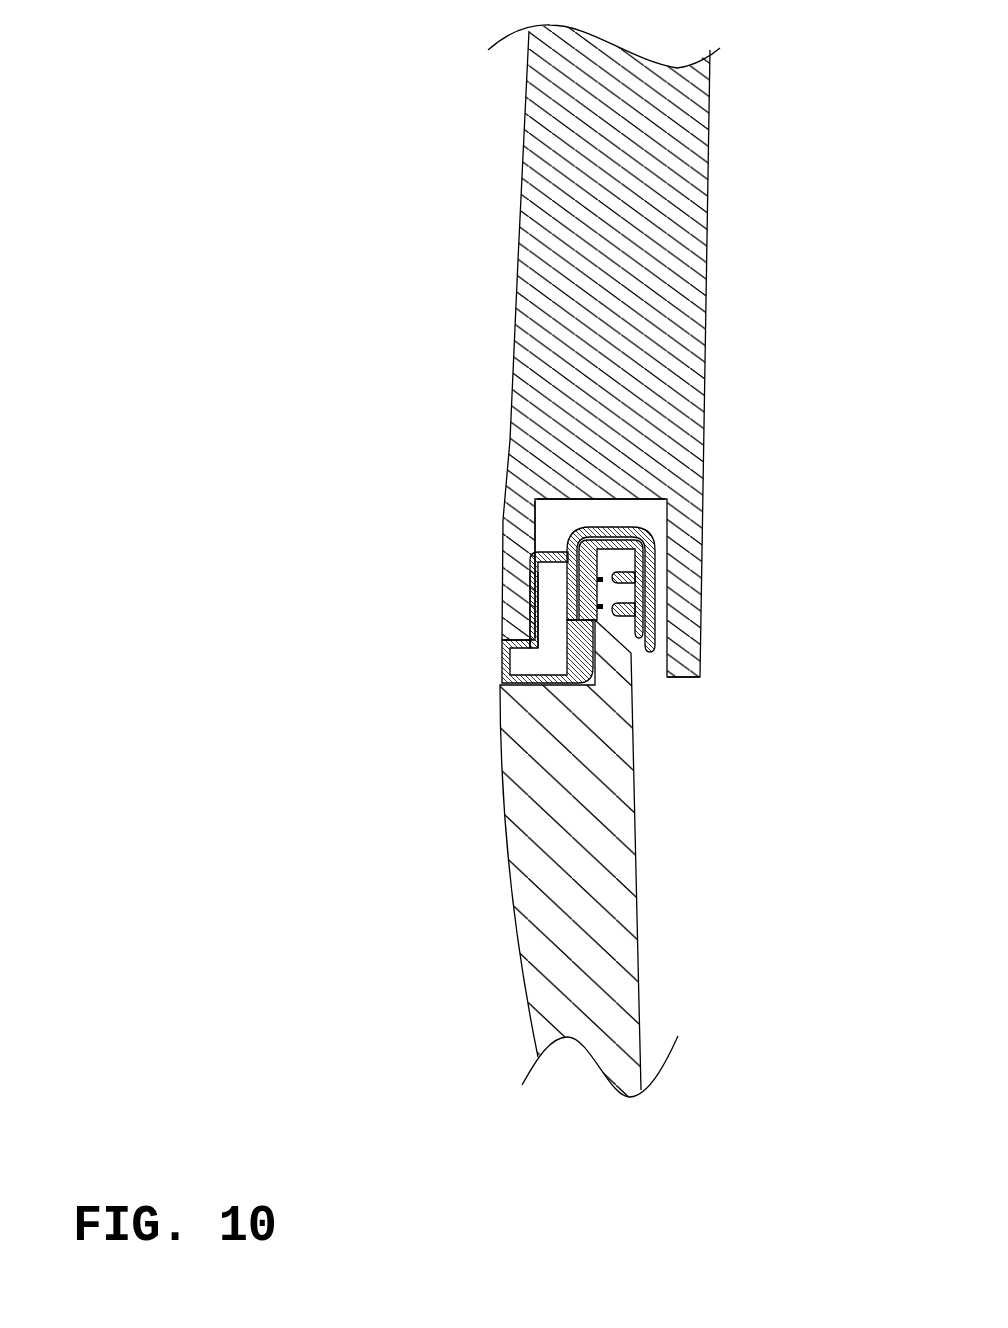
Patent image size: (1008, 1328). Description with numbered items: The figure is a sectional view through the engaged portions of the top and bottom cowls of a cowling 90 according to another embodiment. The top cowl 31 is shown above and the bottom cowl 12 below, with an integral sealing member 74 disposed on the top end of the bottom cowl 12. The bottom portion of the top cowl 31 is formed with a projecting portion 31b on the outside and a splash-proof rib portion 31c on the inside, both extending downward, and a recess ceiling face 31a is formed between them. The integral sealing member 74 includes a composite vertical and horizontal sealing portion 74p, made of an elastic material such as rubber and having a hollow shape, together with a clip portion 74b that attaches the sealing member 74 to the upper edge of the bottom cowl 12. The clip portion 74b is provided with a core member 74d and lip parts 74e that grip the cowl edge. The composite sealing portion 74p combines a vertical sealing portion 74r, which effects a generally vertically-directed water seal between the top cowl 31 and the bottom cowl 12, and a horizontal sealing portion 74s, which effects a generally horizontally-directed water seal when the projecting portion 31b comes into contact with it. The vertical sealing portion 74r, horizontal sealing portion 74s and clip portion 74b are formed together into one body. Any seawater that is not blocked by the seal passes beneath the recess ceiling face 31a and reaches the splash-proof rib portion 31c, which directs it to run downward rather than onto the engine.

The cowling 90 is at (440, 150).
The top cowl 31 is at (521, 262).
The recess ceiling face 31a is at (603, 498).
The projecting portion 31b is at (536, 540).
The splash-proof rib portion 31c is at (682, 668).
The bottom cowl 12 is at (525, 855).
The integral sealing member 74 is at (571, 580).
The core member 74d is at (576, 537).
The composite vertical and horizontal sealing portion 74p is at (425, 603).
The horizontal sealing portion 74s is at (536, 558).
The vertical sealing portion 74r is at (527, 625).
The clip portion 74b is at (650, 613).
The lip parts 74e is at (650, 587).